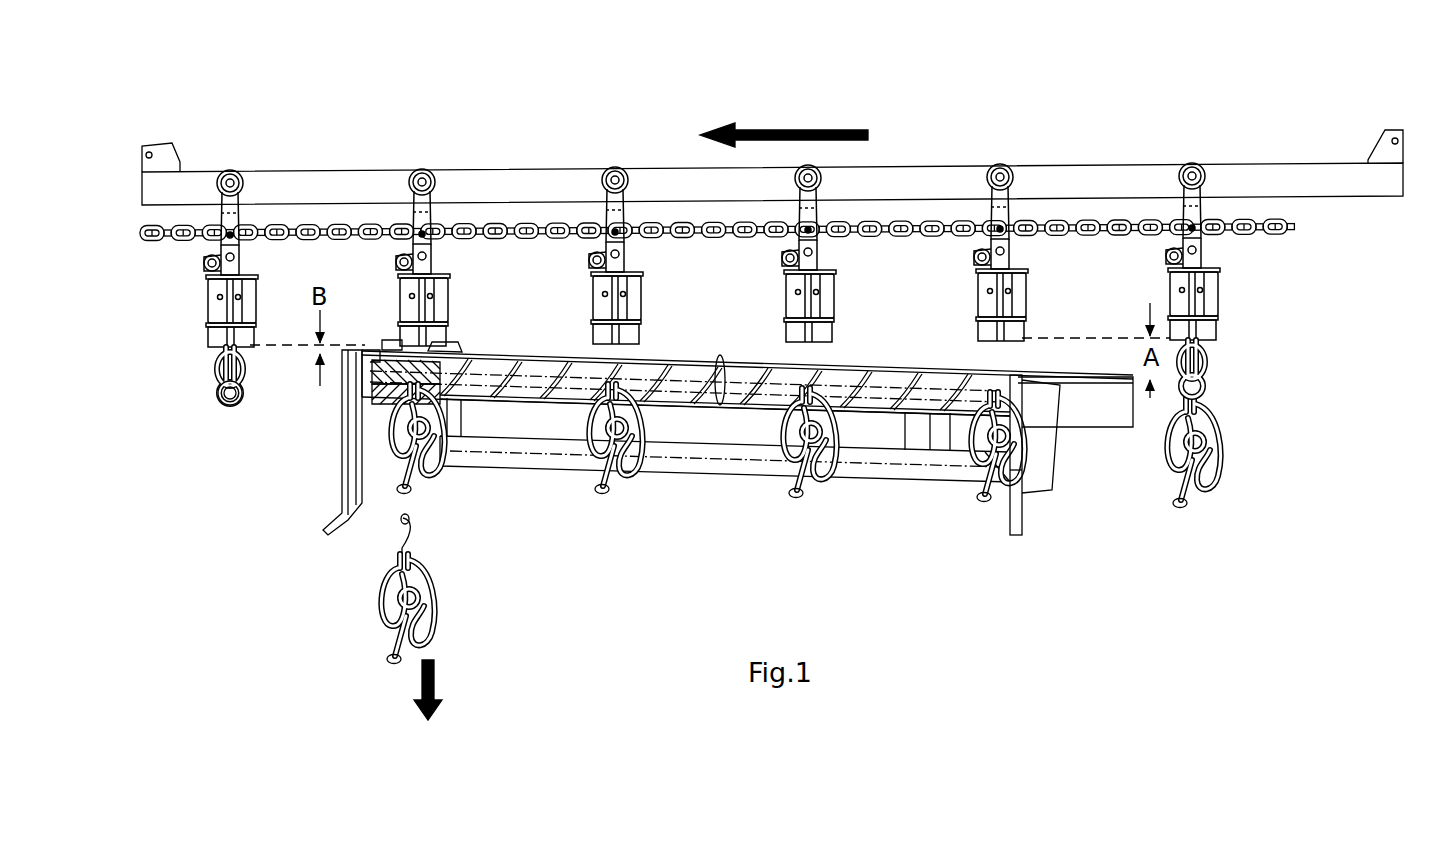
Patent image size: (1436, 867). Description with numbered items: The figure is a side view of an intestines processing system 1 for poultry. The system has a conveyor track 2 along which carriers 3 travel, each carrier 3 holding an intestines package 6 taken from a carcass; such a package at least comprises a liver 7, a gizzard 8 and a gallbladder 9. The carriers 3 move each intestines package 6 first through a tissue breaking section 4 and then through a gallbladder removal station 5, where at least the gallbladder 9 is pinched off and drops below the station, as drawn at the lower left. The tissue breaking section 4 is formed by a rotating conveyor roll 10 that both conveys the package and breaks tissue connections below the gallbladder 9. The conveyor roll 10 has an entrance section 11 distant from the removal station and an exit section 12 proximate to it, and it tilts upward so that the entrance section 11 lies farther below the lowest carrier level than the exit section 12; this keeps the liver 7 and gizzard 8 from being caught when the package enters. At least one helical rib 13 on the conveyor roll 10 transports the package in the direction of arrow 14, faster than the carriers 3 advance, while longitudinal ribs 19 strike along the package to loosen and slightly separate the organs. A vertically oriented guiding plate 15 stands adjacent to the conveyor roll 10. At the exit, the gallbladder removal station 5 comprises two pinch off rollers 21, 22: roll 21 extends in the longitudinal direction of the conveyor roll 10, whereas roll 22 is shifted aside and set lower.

The intestines processing system 1 is at (330, 148).
The conveyor track 2 is at (524, 168).
The carrier 3 is at (198, 302).
The tissue breaking section 4 is at (690, 352).
The gallbladder removal station 5 is at (385, 338).
The intestines package 6 is at (1022, 353).
The liver 7 is at (205, 362).
The gizzard 8 is at (221, 396).
The gallbladder 9 is at (1206, 355).
The conveyor roll 10 is at (745, 402).
The entrance section 11 is at (1085, 458).
The exit section 12 is at (464, 340).
The helical rib 13 is at (492, 397).
The arrow 14 is at (785, 125).
The guiding plate 15 is at (865, 480).
The longitudinal ribs 19 is at (585, 379).
The pinch off roll 21 is at (395, 371).
The pinch off roll 22 is at (390, 413).